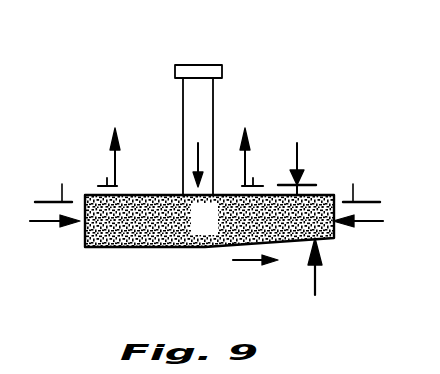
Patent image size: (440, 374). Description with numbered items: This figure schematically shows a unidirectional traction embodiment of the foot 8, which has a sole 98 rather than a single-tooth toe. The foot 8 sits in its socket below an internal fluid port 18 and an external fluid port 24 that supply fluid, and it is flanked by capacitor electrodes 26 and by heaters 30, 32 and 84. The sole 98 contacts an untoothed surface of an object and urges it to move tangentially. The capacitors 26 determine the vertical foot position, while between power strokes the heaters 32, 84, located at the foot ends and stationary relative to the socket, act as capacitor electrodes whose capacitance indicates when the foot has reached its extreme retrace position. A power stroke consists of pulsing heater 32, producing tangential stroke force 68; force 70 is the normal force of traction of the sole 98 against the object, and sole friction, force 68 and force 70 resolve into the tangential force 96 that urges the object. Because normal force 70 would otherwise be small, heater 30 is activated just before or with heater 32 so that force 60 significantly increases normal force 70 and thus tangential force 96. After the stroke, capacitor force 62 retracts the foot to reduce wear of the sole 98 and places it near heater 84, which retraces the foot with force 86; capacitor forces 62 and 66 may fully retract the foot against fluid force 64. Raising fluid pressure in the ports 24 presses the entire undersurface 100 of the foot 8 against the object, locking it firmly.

The foot 8 is at (212, 232).
The internal fluid port 18 is at (213, 105).
The external fluid port 24 is at (175, 70).
The capacitor electrode 26 is at (103, 186).
The heater 30 is at (313, 186).
The heater 32 is at (62, 184).
The force 60 is at (300, 153).
The capacitor force 62 is at (240, 134).
The fluid force 64 is at (198, 165).
The capacitor force 66 is at (120, 142).
The tangential stroke force 68 is at (72, 226).
The normal force 70 is at (320, 288).
The heater 84 is at (353, 184).
The force 86 is at (348, 226).
The tangential force 96 is at (232, 265).
The sole 98 is at (305, 246).
The undersurface 100 is at (177, 250).